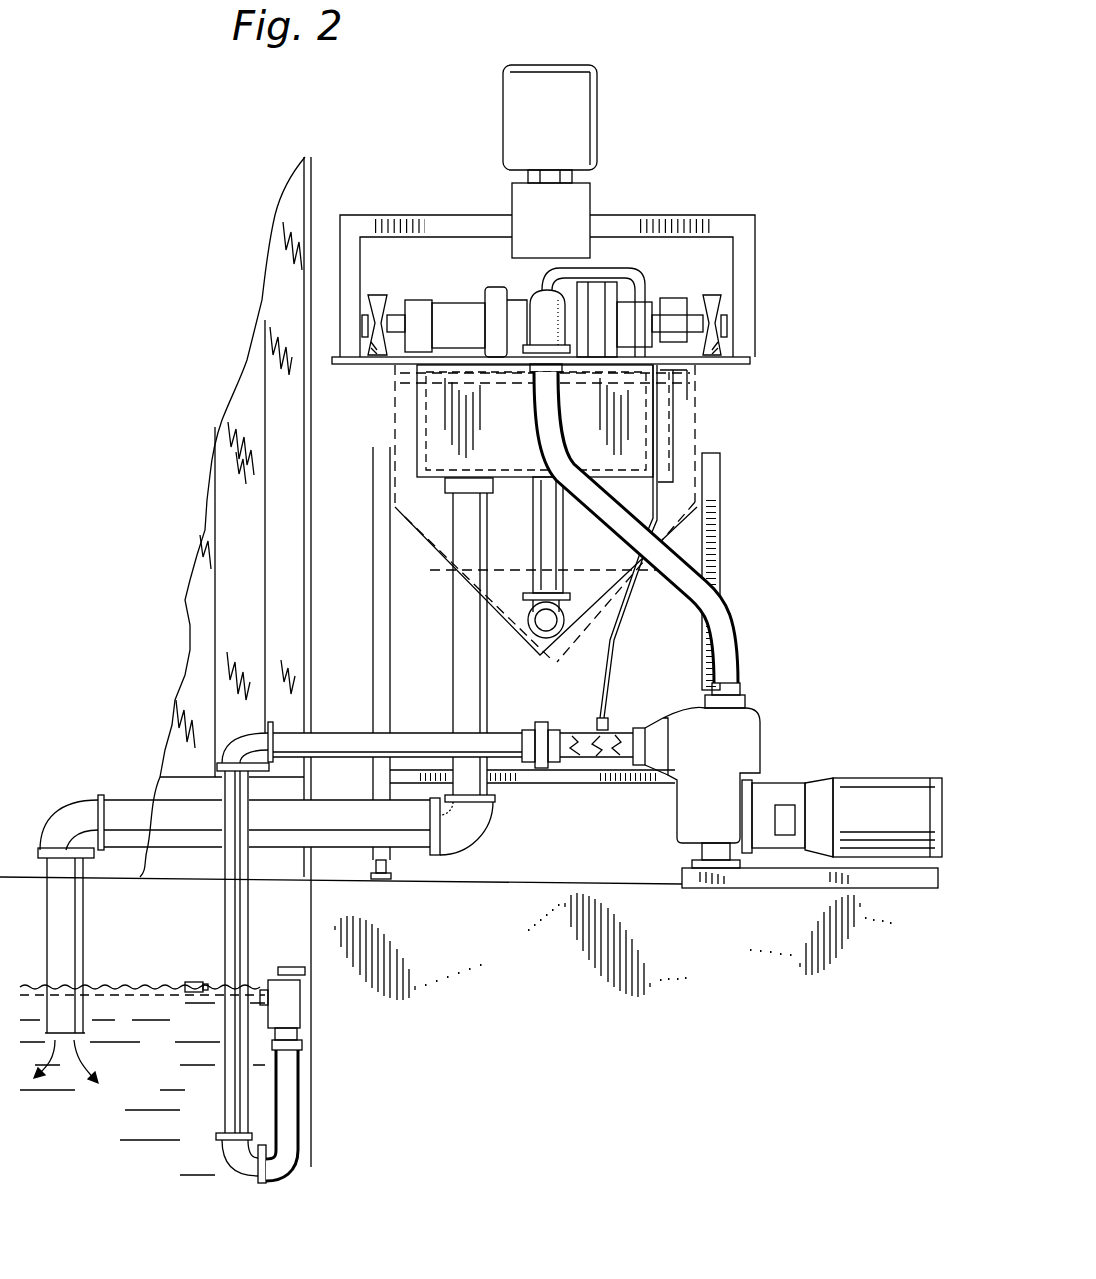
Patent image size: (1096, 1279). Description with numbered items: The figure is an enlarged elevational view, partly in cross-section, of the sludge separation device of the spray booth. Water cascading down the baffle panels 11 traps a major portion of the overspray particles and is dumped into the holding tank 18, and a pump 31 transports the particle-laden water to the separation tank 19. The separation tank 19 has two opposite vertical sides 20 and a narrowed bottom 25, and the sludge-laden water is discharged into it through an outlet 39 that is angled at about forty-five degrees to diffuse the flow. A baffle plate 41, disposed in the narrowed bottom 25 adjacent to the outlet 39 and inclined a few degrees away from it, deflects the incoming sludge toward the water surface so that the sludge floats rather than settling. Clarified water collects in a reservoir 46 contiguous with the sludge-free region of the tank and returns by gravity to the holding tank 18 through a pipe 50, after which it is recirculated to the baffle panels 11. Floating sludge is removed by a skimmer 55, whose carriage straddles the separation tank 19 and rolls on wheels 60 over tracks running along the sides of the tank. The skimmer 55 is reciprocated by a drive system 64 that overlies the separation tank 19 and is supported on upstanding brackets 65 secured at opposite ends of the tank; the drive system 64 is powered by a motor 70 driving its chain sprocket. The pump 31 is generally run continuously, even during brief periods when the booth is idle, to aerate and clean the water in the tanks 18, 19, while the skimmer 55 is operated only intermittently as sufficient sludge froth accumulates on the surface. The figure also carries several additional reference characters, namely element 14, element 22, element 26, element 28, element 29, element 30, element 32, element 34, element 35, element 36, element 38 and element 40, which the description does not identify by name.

The baffle panels 11 is at (218, 555).
The wall face 14 is at (300, 204).
The holding tank 18 is at (136, 1120).
The separation tank 19 is at (716, 478).
The sides of separation tank 20 is at (395, 400).
The deflector 22 is at (430, 530).
The narrowed bottom 25 is at (545, 700).
The valve 26 is at (293, 1002).
The flexible hose 28 is at (258, 988).
The float 29 is at (192, 980).
The suction pipe 30 is at (226, 897).
The pump 31 is at (742, 757).
The control tube 32 is at (610, 672).
The pipe coupling 34 is at (587, 760).
The flexible hose 35 is at (730, 605).
The nozzle head 36 is at (545, 312).
The nozzle tube 38 is at (550, 535).
The outlet 39 is at (538, 643).
The conduit 40 is at (643, 285).
The baffle plate 41 is at (556, 640).
The reservoir 46 is at (674, 420).
The pipe 50 is at (455, 705).
The skimmer 55 is at (687, 293).
The wheels 60 is at (384, 293).
The drive system 64 is at (549, 231).
The upstanding brackets 65 is at (655, 228).
The motor 70 is at (559, 113).